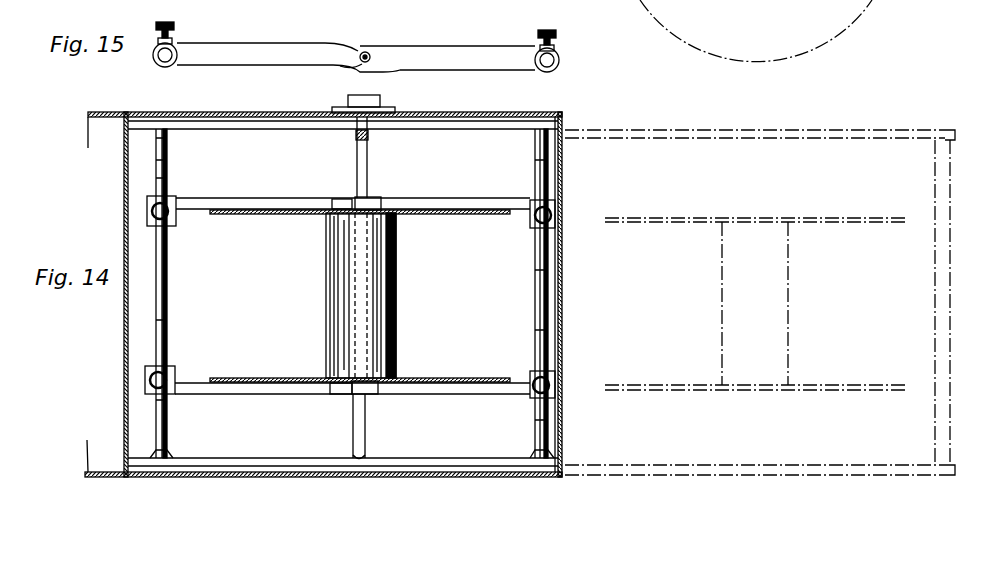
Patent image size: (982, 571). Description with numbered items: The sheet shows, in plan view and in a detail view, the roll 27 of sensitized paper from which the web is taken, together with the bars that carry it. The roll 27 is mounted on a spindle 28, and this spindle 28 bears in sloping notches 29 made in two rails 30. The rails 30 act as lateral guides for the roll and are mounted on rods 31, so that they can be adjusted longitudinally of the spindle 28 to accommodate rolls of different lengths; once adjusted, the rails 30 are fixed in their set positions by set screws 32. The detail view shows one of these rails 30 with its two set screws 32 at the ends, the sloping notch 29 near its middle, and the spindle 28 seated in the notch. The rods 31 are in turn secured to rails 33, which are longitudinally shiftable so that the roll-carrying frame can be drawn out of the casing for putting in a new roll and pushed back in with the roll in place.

In FIG. 14, the roll 27 is at (396, 280).
In FIG. 15, the spindle 28 is at (362, 66).
In FIG. 14, the spindle 28 is at (367, 176).
In FIG. 15, the sloping notches 29 is at (362, 52).
In FIG. 14, the sloping notches 29 is at (350, 190).
In FIG. 15, the rails 30 is at (288, 38).
In FIG. 14, the rails 30 is at (288, 207).
In FIG. 14, the rods 31 is at (166, 318).
In FIG. 15, the set screws 32 is at (172, 24).
In FIG. 14, the set screws 32 is at (168, 203).
In FIG. 14, the rails 33 is at (483, 134).